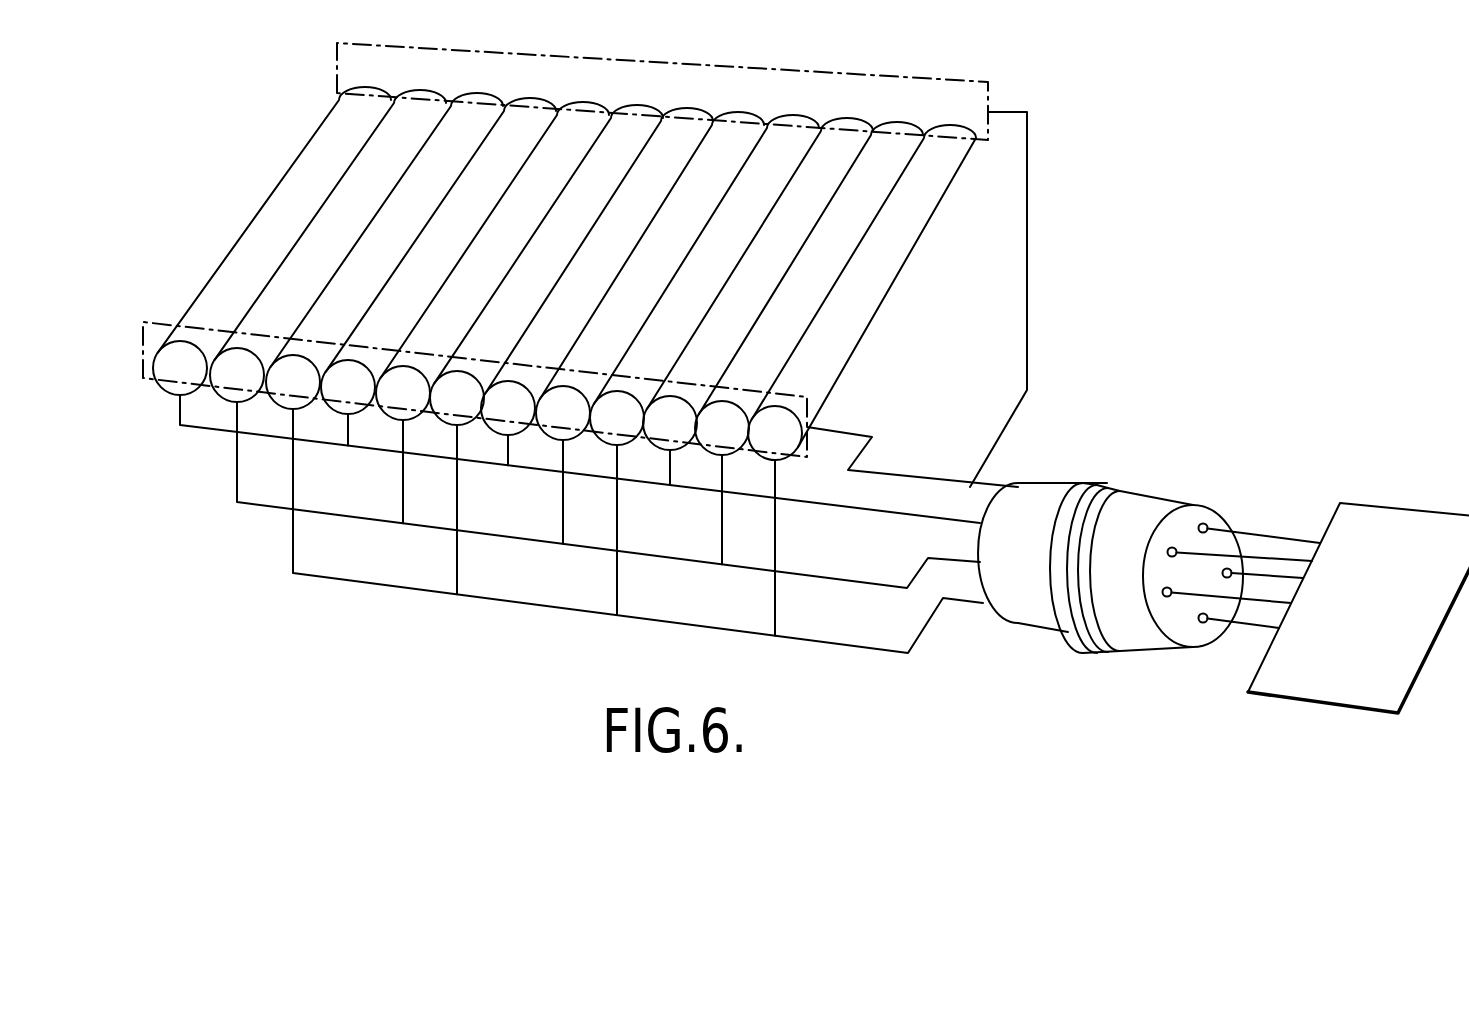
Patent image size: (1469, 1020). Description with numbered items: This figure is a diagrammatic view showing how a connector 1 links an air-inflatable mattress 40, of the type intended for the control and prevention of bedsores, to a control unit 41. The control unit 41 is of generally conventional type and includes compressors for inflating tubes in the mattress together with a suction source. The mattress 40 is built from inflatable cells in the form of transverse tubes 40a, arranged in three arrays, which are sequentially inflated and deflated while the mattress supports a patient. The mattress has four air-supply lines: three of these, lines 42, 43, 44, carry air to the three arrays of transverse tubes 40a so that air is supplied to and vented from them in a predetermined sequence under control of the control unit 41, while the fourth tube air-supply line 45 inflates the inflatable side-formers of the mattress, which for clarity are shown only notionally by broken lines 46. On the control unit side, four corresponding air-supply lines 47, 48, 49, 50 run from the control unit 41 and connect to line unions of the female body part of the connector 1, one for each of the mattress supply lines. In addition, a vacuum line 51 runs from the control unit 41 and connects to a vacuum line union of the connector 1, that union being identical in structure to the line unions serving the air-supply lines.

The connector 1 is at (1196, 386).
The air-inflatable mattress 40 is at (240, 211).
The transverse tubes 40a is at (407, 208).
The control unit 41 is at (1338, 672).
The air-supply line 42 is at (845, 512).
The air-supply line 43 is at (830, 582).
The air-supply line 44 is at (820, 645).
The fourth tube air-supply line 45 is at (993, 487).
The broken lines 46 is at (985, 82).
The air-supply line 47 is at (1245, 532).
The air-supply line 48 is at (1268, 577).
The air-supply line 49 is at (1278, 605).
The air-supply line 50 is at (1285, 628).
The vacuum line 51 is at (1250, 628).